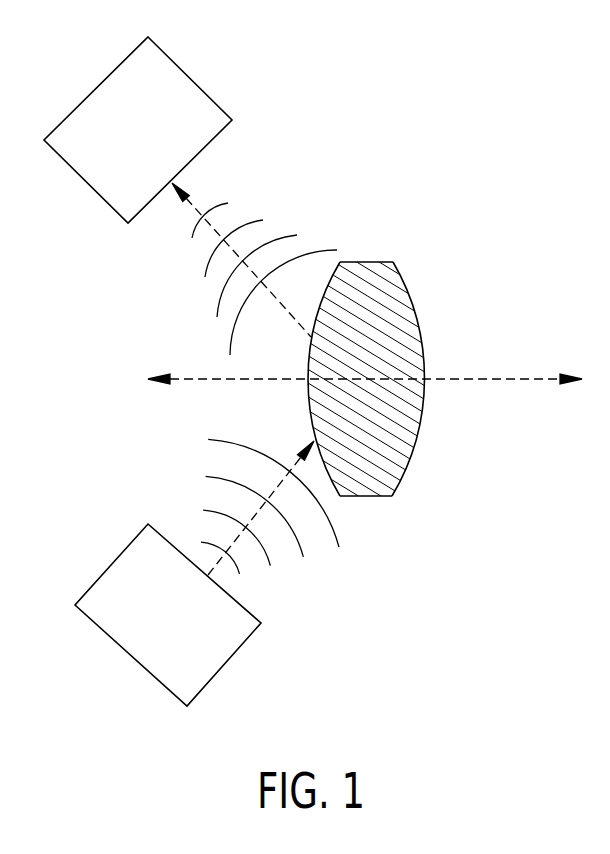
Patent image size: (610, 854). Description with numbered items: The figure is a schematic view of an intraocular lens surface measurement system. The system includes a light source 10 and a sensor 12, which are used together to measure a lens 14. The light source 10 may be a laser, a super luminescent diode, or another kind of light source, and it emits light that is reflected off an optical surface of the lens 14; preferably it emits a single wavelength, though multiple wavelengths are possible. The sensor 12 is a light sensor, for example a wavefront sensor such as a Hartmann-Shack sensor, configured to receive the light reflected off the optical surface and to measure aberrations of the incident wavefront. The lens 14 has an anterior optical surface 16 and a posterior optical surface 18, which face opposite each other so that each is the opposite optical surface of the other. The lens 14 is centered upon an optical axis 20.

The light source 10 is at (228, 660).
The sensor 12 is at (200, 92).
The lens 14 is at (380, 377).
The anterior optical surface 16 is at (333, 275).
The posterior optical surface 18 is at (418, 318).
The optical axis 20 is at (533, 375).